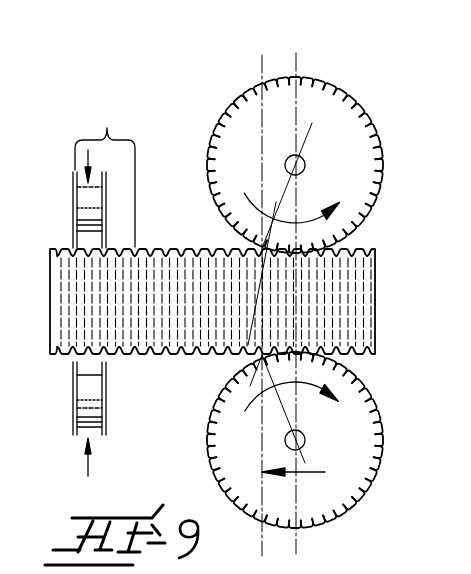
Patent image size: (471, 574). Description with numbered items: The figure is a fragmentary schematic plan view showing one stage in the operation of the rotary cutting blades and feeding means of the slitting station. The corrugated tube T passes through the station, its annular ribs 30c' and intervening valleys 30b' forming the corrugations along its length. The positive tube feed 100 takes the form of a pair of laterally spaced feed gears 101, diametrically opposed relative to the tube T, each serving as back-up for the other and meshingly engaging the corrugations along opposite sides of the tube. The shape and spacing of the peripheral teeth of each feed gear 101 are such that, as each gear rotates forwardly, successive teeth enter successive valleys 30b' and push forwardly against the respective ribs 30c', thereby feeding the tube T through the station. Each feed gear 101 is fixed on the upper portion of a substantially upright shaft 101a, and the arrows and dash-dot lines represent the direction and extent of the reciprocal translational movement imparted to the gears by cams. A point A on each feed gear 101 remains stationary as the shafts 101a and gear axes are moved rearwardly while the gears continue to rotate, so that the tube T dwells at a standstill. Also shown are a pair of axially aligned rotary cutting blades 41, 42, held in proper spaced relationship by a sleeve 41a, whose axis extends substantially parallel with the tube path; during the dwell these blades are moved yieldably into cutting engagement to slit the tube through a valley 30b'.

The positive tube feed 100 is at (317, 84).
The feed gear 101 is at (340, 110).
The upright shaft 101a is at (305, 163).
The corrugated tube T is at (375, 300).
The rib 30c' is at (386, 250).
The valley 30b' is at (392, 343).
The point on feed gear A is at (258, 244).
The rotary cutting blade 41 is at (107, 188).
The sleeve 41a is at (95, 412).
The rotary cutting blade 42 is at (73, 186).